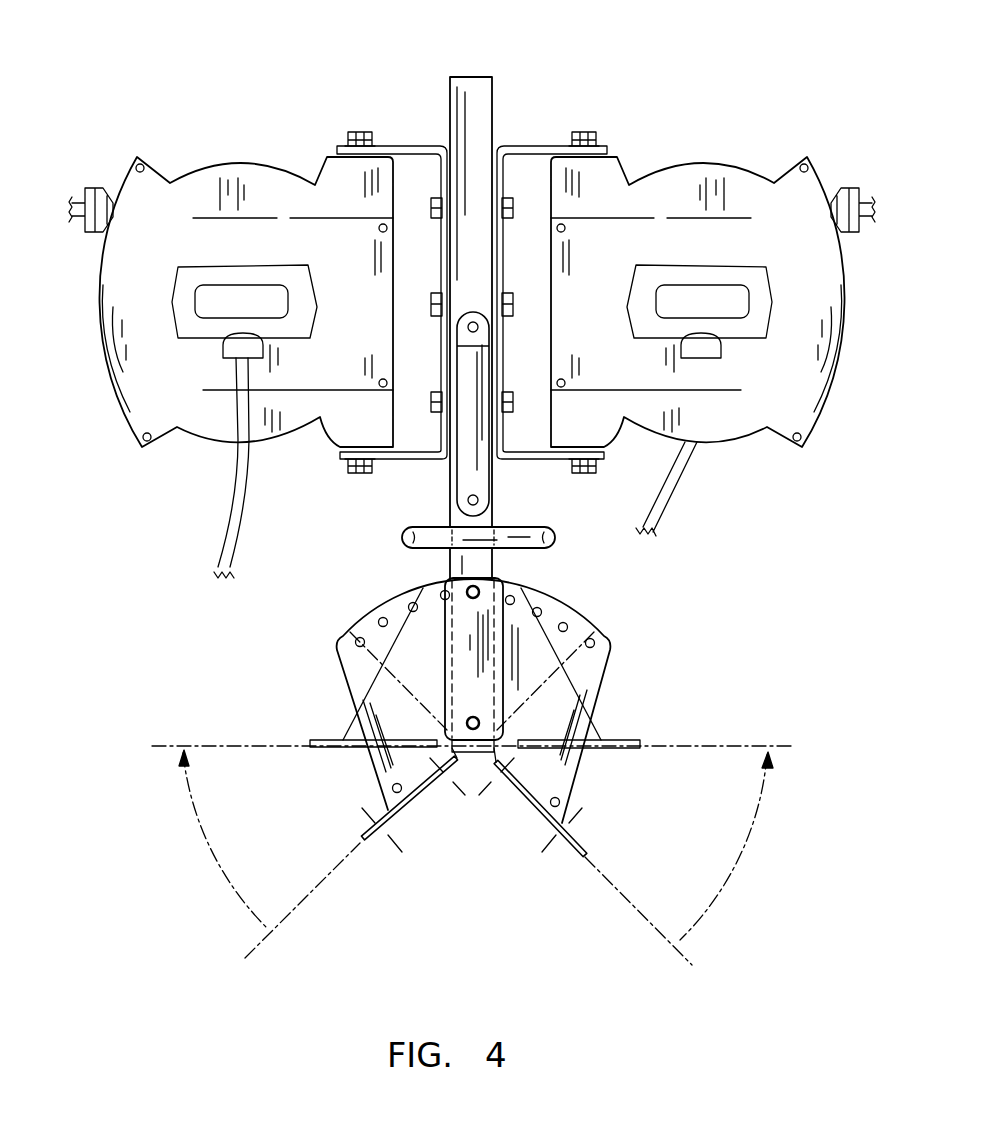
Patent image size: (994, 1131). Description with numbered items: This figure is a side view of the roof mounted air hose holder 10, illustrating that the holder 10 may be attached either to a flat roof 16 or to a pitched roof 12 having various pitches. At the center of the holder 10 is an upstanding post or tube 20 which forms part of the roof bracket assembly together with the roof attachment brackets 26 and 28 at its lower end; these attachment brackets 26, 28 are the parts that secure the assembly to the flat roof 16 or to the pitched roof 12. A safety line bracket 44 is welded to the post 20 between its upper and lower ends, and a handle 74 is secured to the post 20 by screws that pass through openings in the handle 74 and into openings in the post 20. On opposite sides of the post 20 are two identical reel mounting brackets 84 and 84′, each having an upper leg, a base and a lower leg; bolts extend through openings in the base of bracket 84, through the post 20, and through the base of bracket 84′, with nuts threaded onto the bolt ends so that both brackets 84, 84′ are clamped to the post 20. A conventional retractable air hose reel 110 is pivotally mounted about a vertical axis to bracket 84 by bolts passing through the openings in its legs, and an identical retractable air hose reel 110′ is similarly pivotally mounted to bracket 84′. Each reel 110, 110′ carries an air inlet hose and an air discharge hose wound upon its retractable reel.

The roof mounted air hose holder 10 is at (472, 484).
The pitched roof 12 is at (609, 880).
The flat roof 16 is at (734, 748).
The post 20 is at (474, 126).
The roof attachment bracket 26 is at (338, 683).
The roof attachment bracket 28 is at (612, 667).
The safety line bracket 44 is at (546, 541).
The handle 74 is at (470, 456).
The reel mounting bracket 84 is at (539, 144).
The reel mounting bracket 84′ is at (400, 144).
The retractable air hose reel 110 is at (731, 157).
The retractable air hose reel 110′ is at (264, 157).